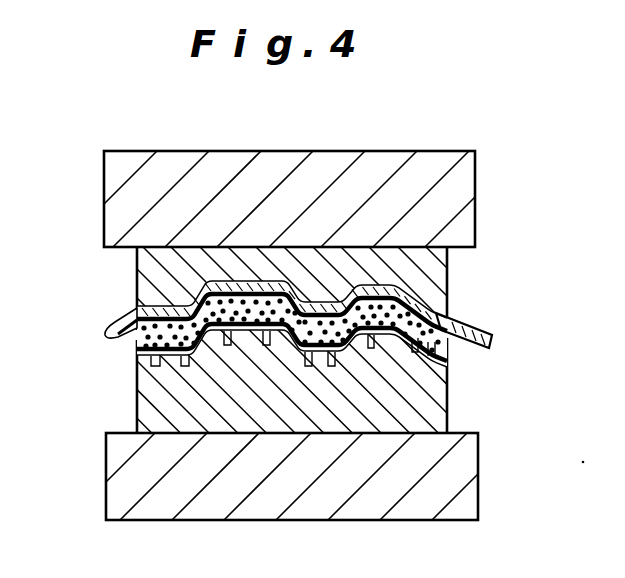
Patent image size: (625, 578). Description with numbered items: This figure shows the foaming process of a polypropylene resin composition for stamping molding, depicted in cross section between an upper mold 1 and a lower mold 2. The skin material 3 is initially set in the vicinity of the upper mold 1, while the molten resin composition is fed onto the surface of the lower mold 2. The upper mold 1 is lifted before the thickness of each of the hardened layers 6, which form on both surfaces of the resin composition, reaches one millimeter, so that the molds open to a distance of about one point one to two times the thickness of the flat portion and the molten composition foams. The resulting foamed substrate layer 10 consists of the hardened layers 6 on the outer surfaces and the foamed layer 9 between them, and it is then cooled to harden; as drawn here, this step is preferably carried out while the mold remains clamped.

The upper mold 1 is at (447, 263).
The lower mold 2 is at (447, 386).
The skin material 3 is at (474, 324).
The hardened layers 6 is at (134, 334).
The foamed layer 9 is at (136, 348).
The foamed substrate layer 10 is at (262, 348).